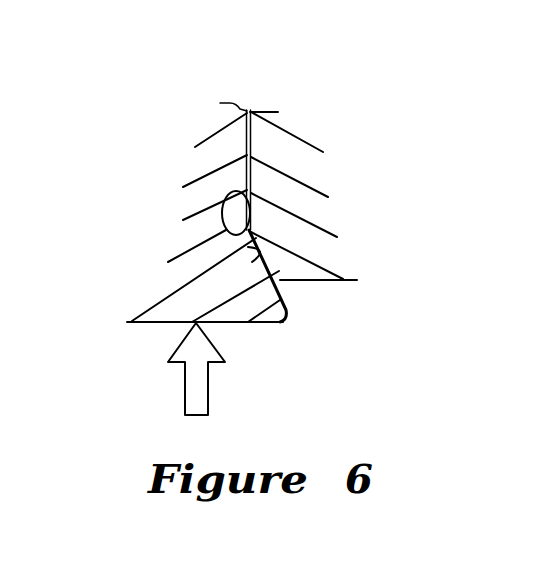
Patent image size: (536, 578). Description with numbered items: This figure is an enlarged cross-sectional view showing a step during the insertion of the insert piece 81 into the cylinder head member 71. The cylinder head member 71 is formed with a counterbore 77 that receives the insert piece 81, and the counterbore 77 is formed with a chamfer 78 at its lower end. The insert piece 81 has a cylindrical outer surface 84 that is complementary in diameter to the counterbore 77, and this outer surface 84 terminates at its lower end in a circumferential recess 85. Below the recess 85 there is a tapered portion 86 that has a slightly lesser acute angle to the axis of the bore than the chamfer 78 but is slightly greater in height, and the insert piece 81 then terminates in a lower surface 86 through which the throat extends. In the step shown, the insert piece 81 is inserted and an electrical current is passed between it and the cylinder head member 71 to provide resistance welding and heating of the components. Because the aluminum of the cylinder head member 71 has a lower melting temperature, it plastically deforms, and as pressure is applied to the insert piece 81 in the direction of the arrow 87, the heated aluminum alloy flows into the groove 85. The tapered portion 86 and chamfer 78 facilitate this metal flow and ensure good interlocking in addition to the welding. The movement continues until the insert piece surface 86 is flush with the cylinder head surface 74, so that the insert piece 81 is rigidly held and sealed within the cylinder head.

The counterbore 77 is at (240, 167).
The cylindrical outer surface 84 is at (258, 128).
The circumferential recess 85 is at (235, 190).
The chamfer 78 is at (245, 242).
The cylinder head surface 74 is at (304, 283).
The cylinder head member 71 is at (357, 280).
The tapered portion 86 is at (143, 323).
The insert piece 81 is at (249, 323).
The arrow 87 is at (185, 388).